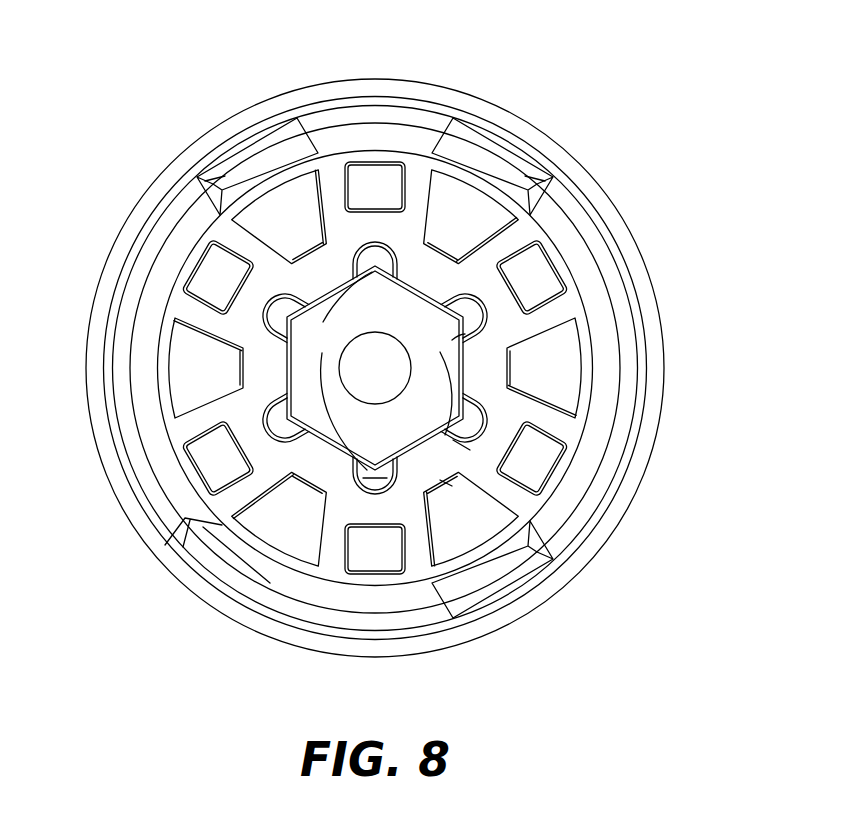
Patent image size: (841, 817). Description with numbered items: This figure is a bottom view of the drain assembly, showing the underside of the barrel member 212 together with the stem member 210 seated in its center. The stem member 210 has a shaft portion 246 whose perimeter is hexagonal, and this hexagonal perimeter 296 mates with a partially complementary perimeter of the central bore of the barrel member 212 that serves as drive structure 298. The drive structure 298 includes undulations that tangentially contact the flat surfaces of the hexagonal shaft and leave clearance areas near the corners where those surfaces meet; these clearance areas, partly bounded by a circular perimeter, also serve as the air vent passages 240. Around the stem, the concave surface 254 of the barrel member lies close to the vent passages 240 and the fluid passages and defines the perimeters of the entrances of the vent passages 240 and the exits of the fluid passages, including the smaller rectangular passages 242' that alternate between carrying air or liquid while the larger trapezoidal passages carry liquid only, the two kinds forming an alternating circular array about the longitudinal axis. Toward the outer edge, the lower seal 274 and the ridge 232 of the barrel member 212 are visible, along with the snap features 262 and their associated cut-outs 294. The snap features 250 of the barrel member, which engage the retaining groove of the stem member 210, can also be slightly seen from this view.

The stem member 210 is at (376, 368).
The barrel member 212 is at (640, 253).
The ridge 232 is at (668, 398).
The vent passages 240 is at (375, 368).
The smaller rectangular passages 242' is at (381, 370).
The shaft portion 246 is at (375, 389).
The snap features 250 is at (333, 287).
The concave surface 254 is at (372, 503).
The snap features 262 is at (250, 170).
The lower seal 274 is at (612, 509).
The cut-outs 294 is at (277, 132).
The hexagonal perimeter 296 is at (455, 443).
The drive structure 298 is at (447, 483).